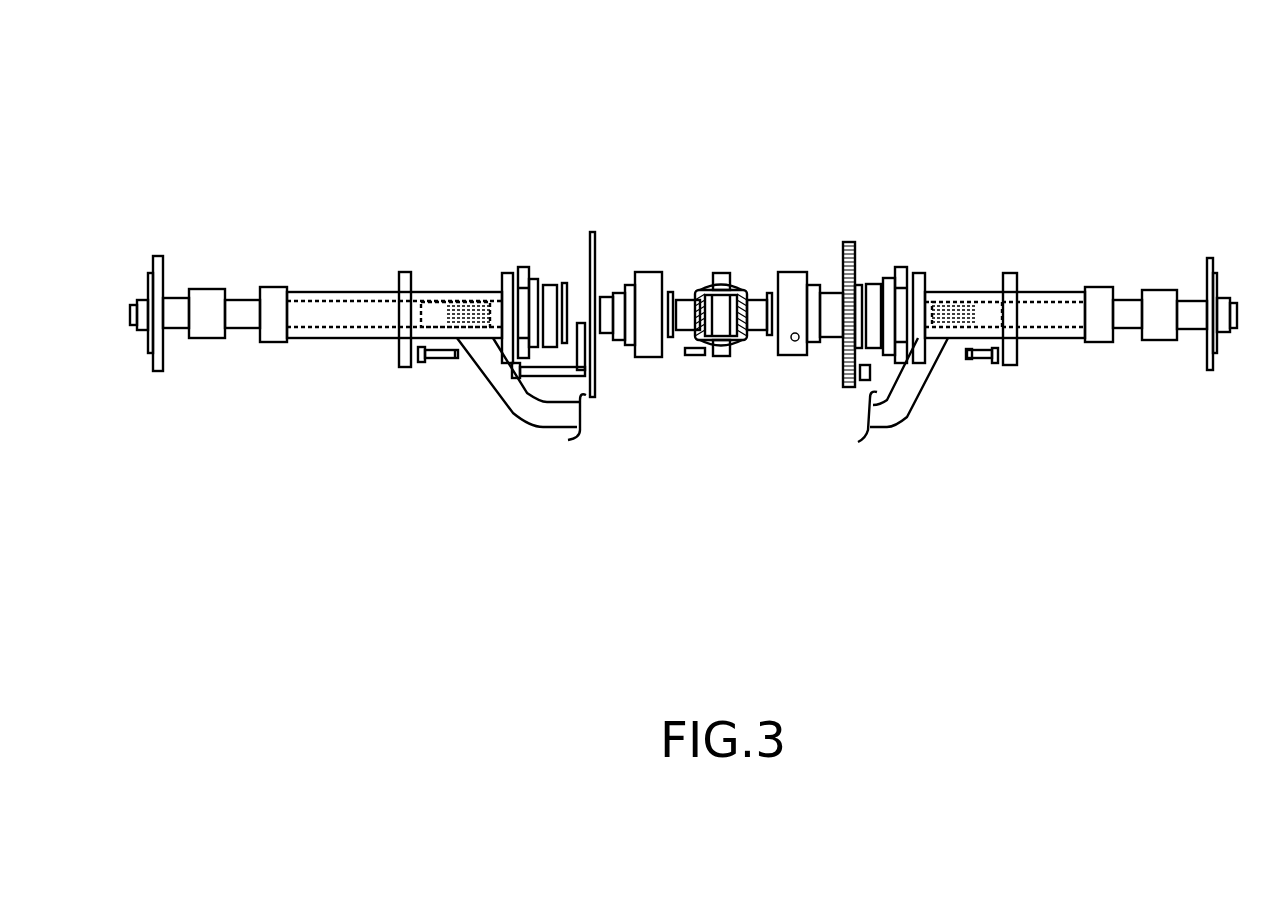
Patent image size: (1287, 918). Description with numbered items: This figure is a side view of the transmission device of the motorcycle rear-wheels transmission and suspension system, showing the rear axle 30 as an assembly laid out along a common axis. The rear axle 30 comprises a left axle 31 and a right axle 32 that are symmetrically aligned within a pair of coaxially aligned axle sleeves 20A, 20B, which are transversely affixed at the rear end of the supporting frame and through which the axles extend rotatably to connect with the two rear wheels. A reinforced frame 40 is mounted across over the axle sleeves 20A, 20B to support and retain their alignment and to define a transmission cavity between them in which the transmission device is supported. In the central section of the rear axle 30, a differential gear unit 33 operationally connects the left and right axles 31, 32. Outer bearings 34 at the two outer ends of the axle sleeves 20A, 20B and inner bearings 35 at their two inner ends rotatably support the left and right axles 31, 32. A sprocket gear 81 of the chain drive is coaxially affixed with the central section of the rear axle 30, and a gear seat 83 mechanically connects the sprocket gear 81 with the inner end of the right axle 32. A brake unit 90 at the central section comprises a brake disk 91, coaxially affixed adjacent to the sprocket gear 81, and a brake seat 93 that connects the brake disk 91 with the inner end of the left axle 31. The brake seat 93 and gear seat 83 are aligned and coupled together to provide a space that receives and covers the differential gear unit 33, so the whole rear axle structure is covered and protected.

The axle sleeve 20A is at (375, 298).
The axle sleeve 20B is at (1037, 298).
The rear axle 30 is at (1167, 344).
The left axle 31 is at (240, 298).
The right axle 32 is at (1128, 345).
The differential gear unit 33 is at (718, 355).
The outer bearings 34 is at (200, 338).
The inner bearings 35 is at (550, 290).
The reinforced frame 40 is at (920, 395).
The sprocket gear 81 is at (843, 380).
The gear seat 83 is at (780, 290).
The brake unit 90 is at (607, 450).
The brake disk 91 is at (592, 237).
The brake seat 93 is at (648, 290).